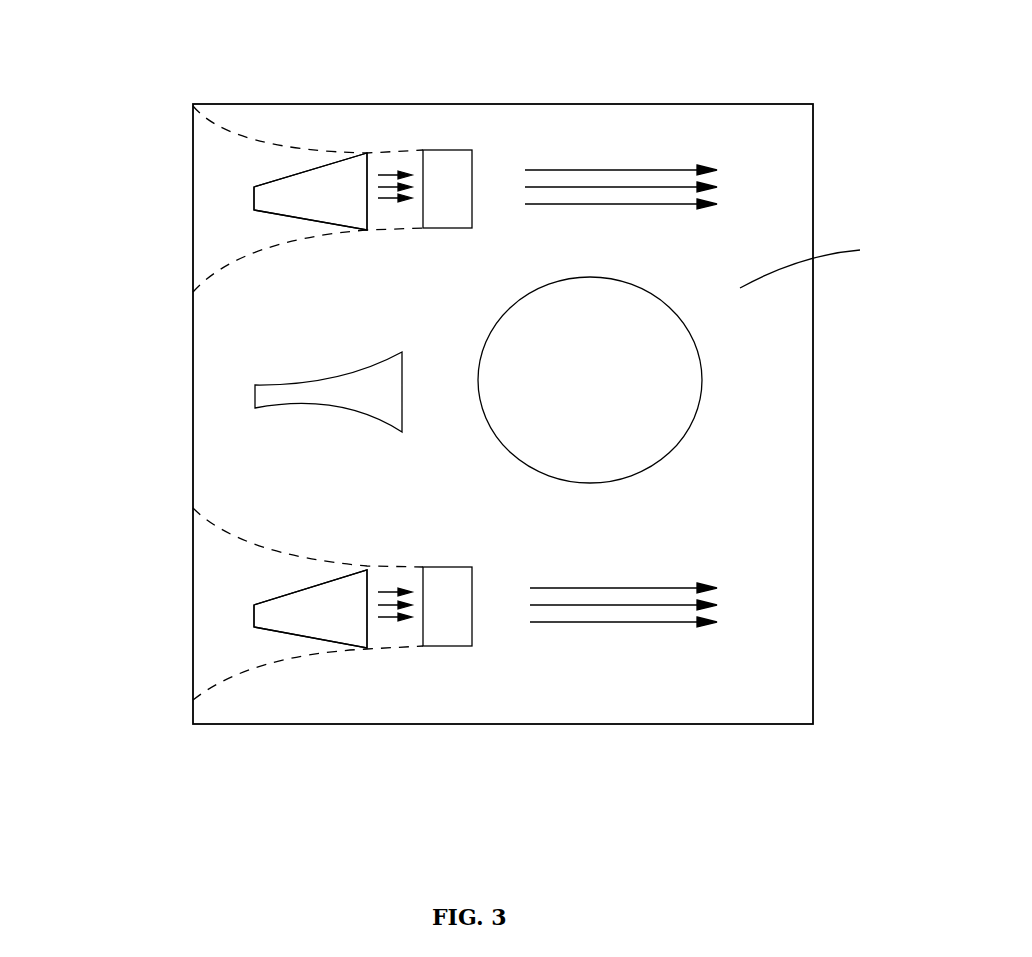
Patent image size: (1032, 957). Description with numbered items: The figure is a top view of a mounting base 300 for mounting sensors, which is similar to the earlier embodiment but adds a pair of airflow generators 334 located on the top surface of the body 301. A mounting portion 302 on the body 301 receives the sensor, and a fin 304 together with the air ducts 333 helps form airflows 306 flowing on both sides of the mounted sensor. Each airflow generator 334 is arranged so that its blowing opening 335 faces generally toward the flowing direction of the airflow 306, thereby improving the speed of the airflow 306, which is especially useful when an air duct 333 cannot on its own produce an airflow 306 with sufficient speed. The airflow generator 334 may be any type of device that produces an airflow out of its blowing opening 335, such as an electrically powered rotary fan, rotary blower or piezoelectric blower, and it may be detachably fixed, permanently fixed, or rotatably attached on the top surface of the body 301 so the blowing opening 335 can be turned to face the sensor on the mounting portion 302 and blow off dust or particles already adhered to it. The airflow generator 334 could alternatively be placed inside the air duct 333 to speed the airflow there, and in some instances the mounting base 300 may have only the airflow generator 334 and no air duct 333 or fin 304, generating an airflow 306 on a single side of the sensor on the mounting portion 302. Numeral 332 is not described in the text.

The mounting base 300 is at (140, 104).
The body 301 is at (825, 264).
The mounting portion 302 is at (628, 418).
The fin 304 is at (267, 396).
The airflow 306 is at (628, 170).
The transceiver module 332 is at (458, 185).
The air duct 333 is at (268, 173).
The airflow generator 334 is at (333, 187).
The blowing opening 335 is at (369, 210).